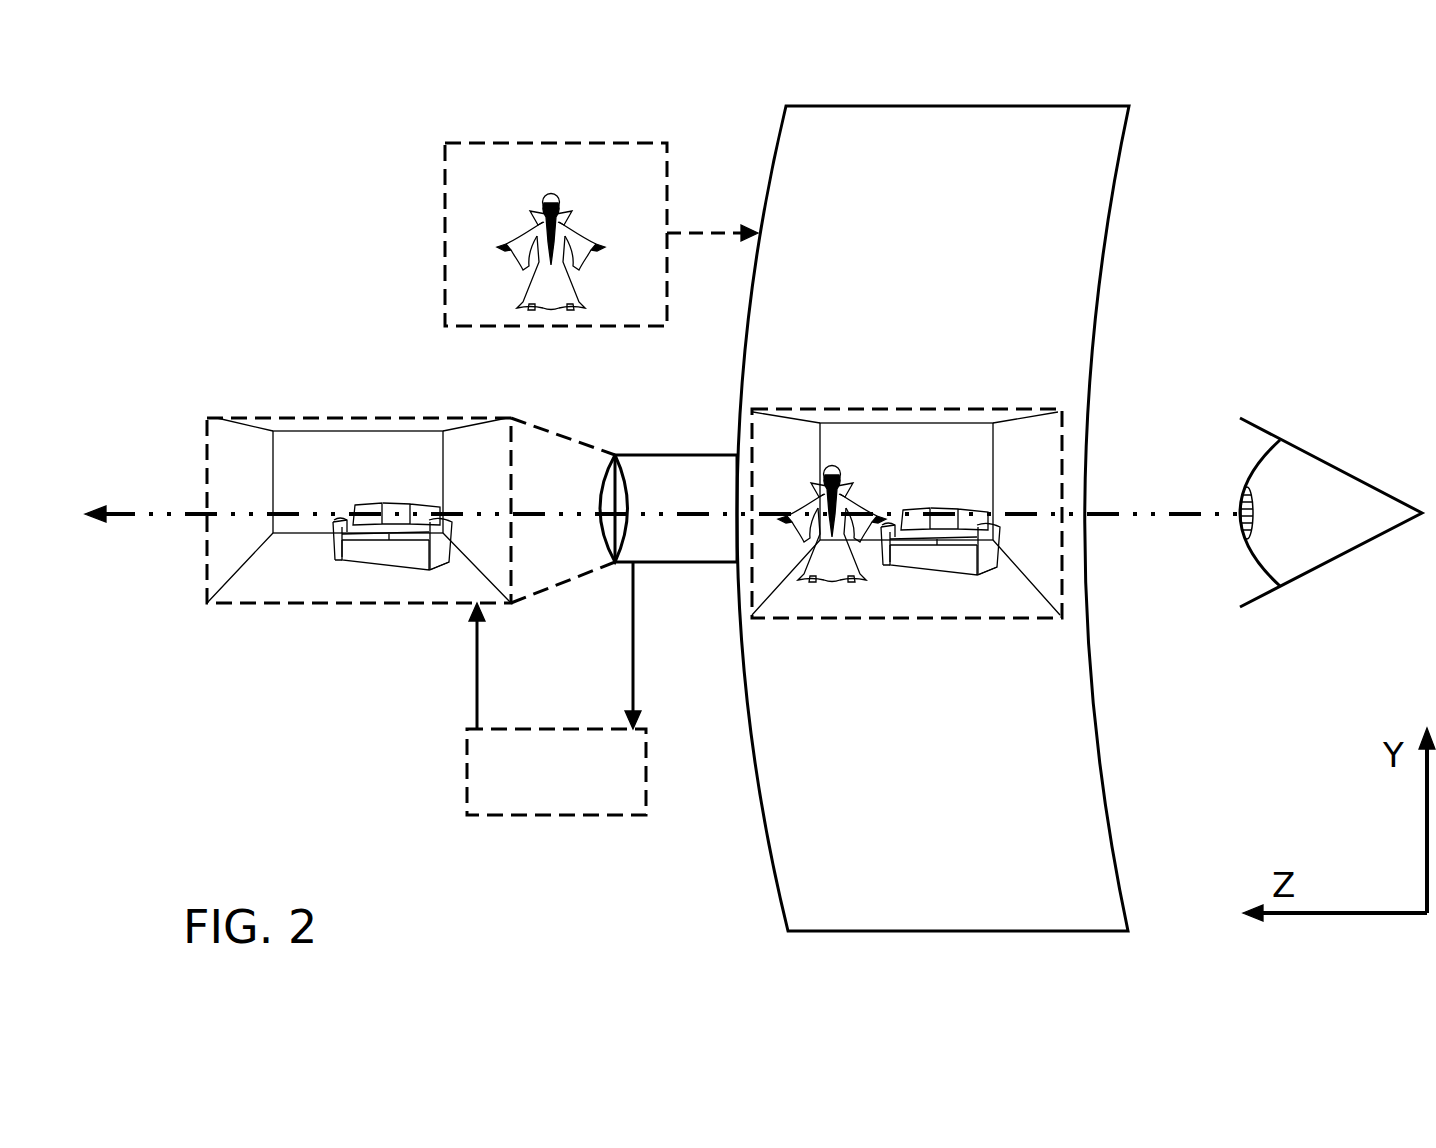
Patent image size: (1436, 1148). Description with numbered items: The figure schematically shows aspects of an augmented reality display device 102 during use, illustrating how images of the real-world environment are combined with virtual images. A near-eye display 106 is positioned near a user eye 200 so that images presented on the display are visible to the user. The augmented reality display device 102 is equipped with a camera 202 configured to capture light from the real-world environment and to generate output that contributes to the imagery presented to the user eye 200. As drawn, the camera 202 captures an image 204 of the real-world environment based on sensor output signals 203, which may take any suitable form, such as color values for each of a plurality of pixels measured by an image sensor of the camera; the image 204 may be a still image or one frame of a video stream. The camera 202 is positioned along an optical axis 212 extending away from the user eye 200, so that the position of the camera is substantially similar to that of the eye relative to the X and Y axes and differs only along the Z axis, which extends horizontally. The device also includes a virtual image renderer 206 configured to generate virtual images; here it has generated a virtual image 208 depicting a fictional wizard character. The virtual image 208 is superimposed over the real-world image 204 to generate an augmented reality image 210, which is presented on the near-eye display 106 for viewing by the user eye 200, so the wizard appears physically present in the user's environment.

The augmented reality display device 102 is at (265, 110).
The near-eye display 106 is at (1100, 106).
The user eye 200 is at (1312, 452).
The camera 202 is at (662, 455).
The sensor output signals 203 is at (467, 783).
The image of the real-world environment 204 is at (258, 418).
The virtual image renderer 206 is at (445, 200).
The virtual image 208 is at (474, 257).
The augmented reality image 210 is at (832, 409).
The optical axis 212 is at (140, 512).